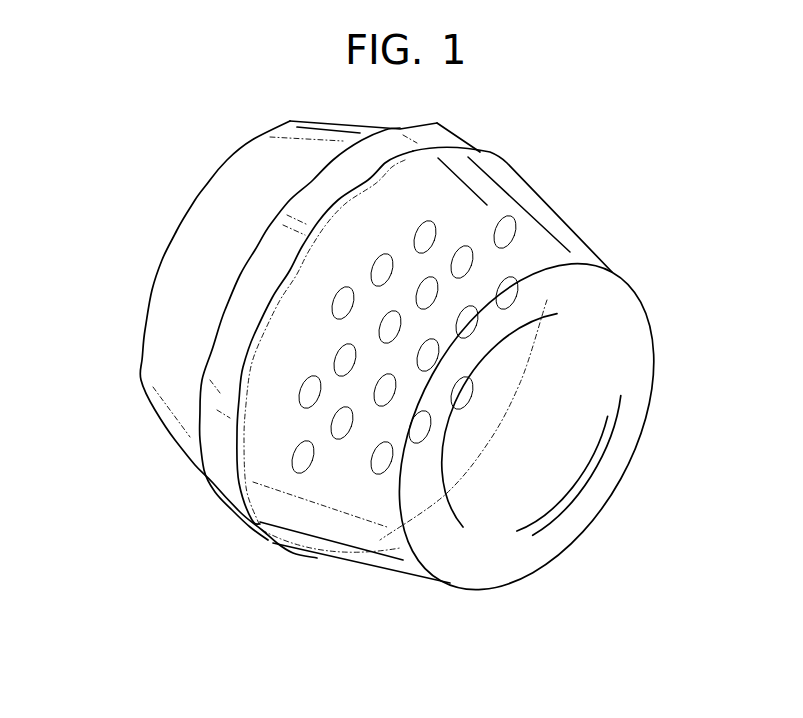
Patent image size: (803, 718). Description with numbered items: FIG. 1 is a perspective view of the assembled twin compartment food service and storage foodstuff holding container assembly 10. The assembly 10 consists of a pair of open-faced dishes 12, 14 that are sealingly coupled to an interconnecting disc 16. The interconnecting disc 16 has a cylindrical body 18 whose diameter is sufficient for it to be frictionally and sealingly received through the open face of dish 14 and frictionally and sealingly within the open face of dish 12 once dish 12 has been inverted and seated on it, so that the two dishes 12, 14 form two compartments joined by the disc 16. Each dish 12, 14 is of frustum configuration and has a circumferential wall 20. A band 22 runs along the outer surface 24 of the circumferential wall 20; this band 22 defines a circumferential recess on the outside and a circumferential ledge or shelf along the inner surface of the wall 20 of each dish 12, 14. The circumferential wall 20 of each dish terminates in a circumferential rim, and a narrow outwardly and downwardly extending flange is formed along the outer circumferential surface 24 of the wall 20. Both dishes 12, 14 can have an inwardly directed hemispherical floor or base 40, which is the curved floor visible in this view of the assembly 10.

The food service and storage foodstuff holding container assembly 10 is at (160, 201).
The open-faced dish 12 is at (280, 152).
The open-faced dish 14 is at (603, 267).
The interconnecting disc 16 is at (453, 140).
The cylindrical body 18 is at (208, 467).
The circumferential wall 20 is at (155, 358).
The band 22 is at (558, 216).
The outer surface 24 is at (440, 212).
The hemispherical floor 40 is at (503, 503).